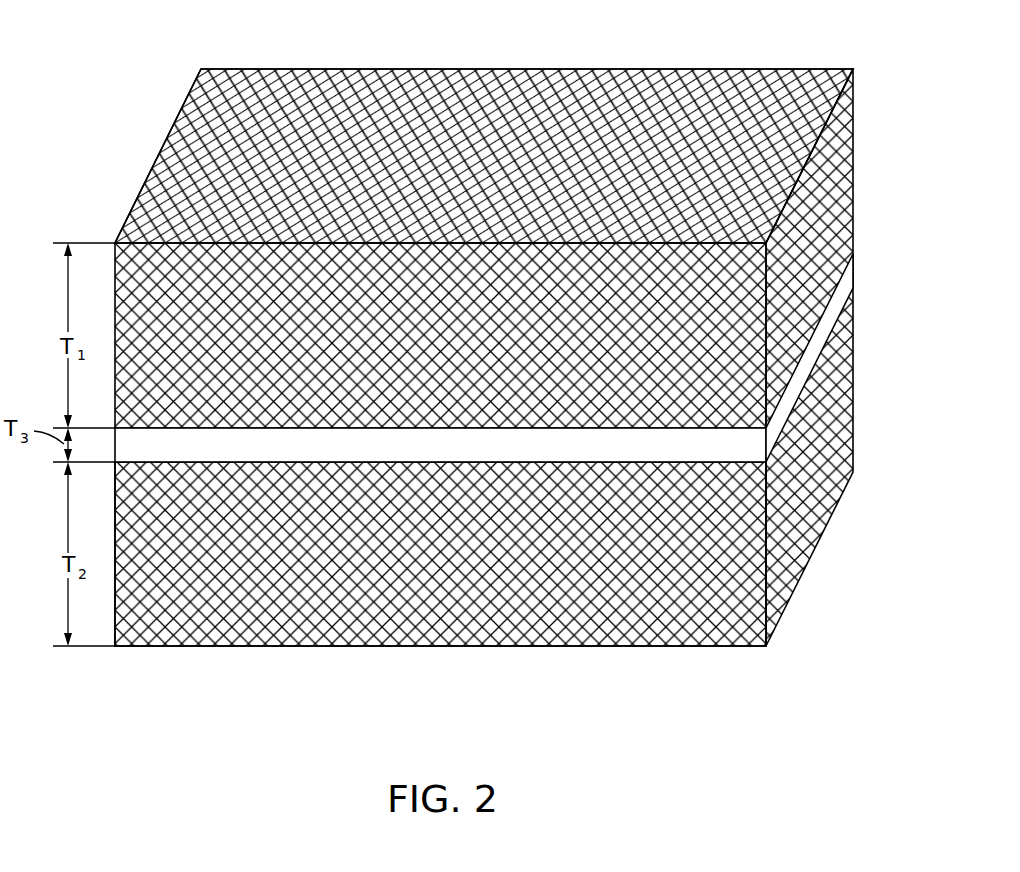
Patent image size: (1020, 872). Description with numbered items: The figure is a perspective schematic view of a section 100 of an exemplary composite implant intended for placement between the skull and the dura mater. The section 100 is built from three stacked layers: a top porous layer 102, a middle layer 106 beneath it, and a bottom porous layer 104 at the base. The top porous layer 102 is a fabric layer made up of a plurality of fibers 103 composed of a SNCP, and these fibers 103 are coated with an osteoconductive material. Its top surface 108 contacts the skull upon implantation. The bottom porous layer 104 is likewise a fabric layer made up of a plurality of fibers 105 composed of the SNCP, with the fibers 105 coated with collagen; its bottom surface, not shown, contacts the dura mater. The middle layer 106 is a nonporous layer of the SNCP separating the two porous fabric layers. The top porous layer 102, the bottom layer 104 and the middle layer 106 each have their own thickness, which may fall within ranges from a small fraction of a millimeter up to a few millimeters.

The section of composite implant 100 is at (519, 378).
The top porous layer 102 is at (848, 205).
The fibers 103 is at (201, 157).
The bottom porous layer 104 is at (843, 393).
The fibers 105 is at (220, 617).
The middle layer 106 is at (850, 283).
The top surface 108 is at (496, 87).